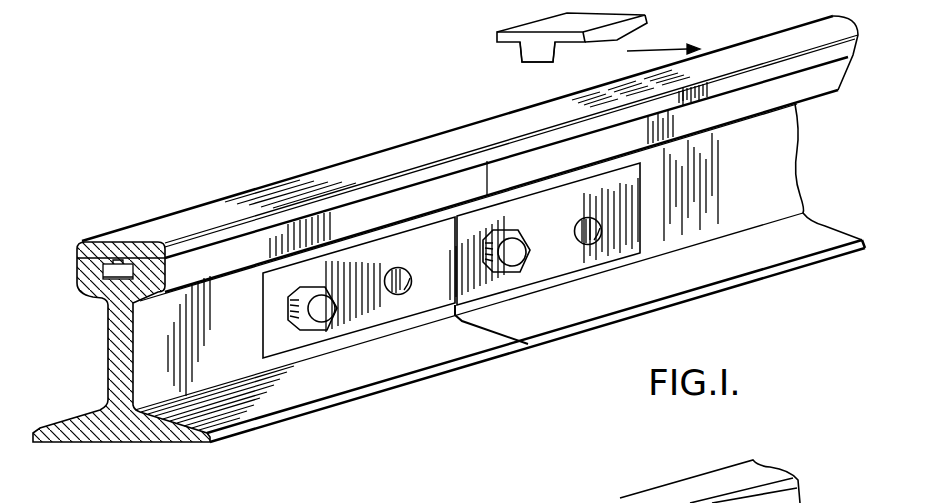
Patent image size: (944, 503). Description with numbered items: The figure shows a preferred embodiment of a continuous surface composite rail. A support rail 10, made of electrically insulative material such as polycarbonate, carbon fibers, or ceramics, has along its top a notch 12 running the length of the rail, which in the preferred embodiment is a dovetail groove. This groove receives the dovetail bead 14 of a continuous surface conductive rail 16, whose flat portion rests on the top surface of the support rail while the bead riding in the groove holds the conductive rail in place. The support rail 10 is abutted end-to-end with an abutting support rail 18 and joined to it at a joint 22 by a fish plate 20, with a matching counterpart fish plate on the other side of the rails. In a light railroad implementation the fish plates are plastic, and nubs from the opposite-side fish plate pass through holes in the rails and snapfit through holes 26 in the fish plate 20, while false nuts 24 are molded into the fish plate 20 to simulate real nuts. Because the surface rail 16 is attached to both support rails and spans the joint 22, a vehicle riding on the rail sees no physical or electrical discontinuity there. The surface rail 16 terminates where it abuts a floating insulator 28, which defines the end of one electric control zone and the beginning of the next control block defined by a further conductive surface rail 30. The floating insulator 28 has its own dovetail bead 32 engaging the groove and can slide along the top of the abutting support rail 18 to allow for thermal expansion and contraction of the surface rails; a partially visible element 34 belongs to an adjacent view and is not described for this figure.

The support rail 10 is at (107, 372).
The notch 12 is at (100, 298).
The dovetail bead 14 is at (122, 267).
The conductive surface rail 16 is at (198, 223).
The abutting support rail 18 is at (747, 200).
The fish plate 20 is at (317, 337).
The joint 22 is at (510, 353).
The false nuts 24 is at (302, 330).
The holes 26 is at (398, 300).
The floating insulator 28 is at (496, 40).
The conductive surface rail 30 is at (793, 34).
The dovetail bead 32 is at (533, 50).
The rail section of FIG. 2 34 is at (728, 481).